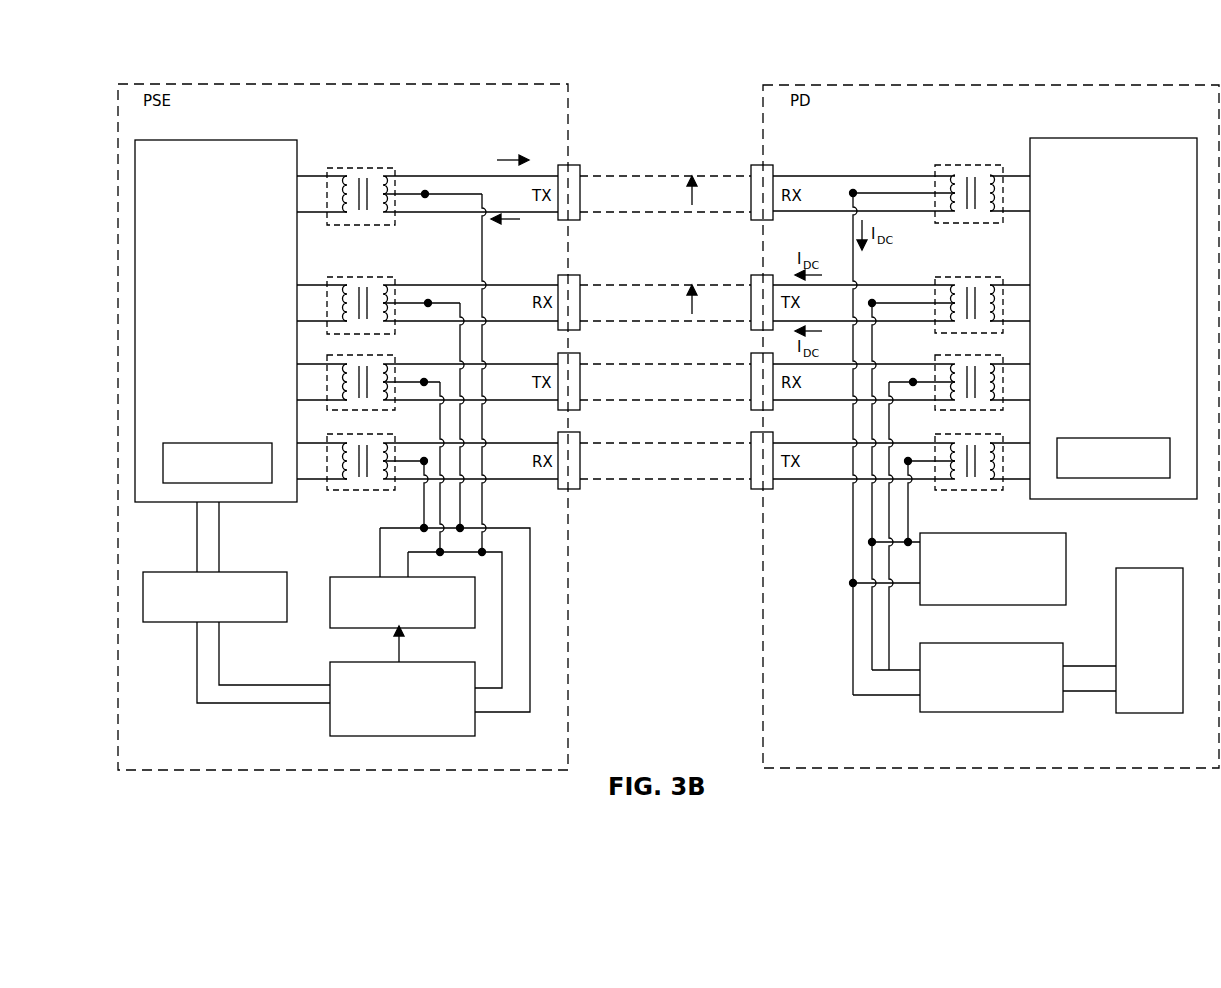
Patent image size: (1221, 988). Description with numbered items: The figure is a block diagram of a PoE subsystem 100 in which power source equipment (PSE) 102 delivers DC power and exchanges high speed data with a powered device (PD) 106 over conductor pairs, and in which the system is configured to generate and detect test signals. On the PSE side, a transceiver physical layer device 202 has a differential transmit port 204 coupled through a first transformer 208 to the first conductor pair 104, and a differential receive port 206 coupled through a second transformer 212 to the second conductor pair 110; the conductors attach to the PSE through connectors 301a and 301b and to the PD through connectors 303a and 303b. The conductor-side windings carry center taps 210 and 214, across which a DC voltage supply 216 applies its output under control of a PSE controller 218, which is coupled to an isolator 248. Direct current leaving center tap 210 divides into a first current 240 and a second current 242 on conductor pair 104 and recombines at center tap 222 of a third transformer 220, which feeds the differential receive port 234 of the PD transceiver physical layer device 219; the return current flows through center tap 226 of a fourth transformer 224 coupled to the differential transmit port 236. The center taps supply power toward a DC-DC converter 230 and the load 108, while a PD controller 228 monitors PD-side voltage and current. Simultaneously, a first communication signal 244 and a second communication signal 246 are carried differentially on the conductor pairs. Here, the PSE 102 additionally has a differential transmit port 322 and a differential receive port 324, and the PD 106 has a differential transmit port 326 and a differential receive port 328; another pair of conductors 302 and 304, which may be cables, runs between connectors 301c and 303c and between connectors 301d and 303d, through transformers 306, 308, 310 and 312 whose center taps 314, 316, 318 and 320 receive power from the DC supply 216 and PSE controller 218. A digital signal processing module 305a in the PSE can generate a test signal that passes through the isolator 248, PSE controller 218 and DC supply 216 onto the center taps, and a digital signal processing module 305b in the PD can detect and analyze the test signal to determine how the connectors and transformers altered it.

The PoE subsystem 100 is at (664, 82).
The power source equipment (PSE) 102 is at (300, 84).
The first conductor pair 104 is at (626, 195).
The powered device (PD) 106 is at (990, 84).
The load 108 is at (1150, 568).
The second conductor pair 110 is at (626, 305).
The transceiver physical layer device 202 is at (214, 140).
The differential transmit port 204 is at (297, 190).
The differential receive port 206 is at (297, 302).
The first transformer 208 is at (365, 168).
The center tap 210 is at (427, 191).
The second transformer 212 is at (362, 277).
The center tap 214 is at (430, 301).
The DC voltage supply 216 is at (330, 577).
The PSE controller 218 is at (330, 665).
The transceiver physical layer device 219 is at (1113, 138).
The third transformer 220 is at (970, 165).
The center tap 222 is at (854, 189).
The fourth transformer 224 is at (970, 277).
The center tap 226 is at (876, 301).
The PD controller 228 is at (1066, 534).
The DC-DC converter 230 is at (1066, 644).
The differential receive port 234 is at (1030, 191).
The differential transmit port 236 is at (1030, 304).
The first current 240 is at (516, 146).
The second current 242 is at (511, 242).
The first communication signal 244 is at (687, 196).
The second communication signal 246 is at (687, 305).
The isolator 248 is at (287, 572).
The connector 301a is at (580, 167).
The connector 301b is at (580, 277).
The connector 301c is at (580, 355).
The connector 301d is at (580, 434).
The conductor 302 is at (626, 385).
The connector 303a is at (751, 167).
The connector 303b is at (751, 277).
The connector 303c is at (751, 355).
The connector 303d is at (751, 434).
The conductor 304 is at (626, 465).
The digital signal processing module 305a is at (215, 443).
The digital signal processing module 305b is at (1112, 438).
The transformer 306 is at (378, 352).
The transformer 308 is at (352, 434).
The transformer 310 is at (972, 355).
The transformer 312 is at (972, 434).
The center tap 314 is at (426, 381).
The center tap 316 is at (424, 460).
The center tap 318 is at (914, 379).
The center tap 320 is at (911, 466).
The differential transmit port 322 is at (297, 388).
The differential receive port 324 is at (297, 462).
The differential transmit port 326 is at (1030, 380).
The differential receive port 328 is at (1032, 458).